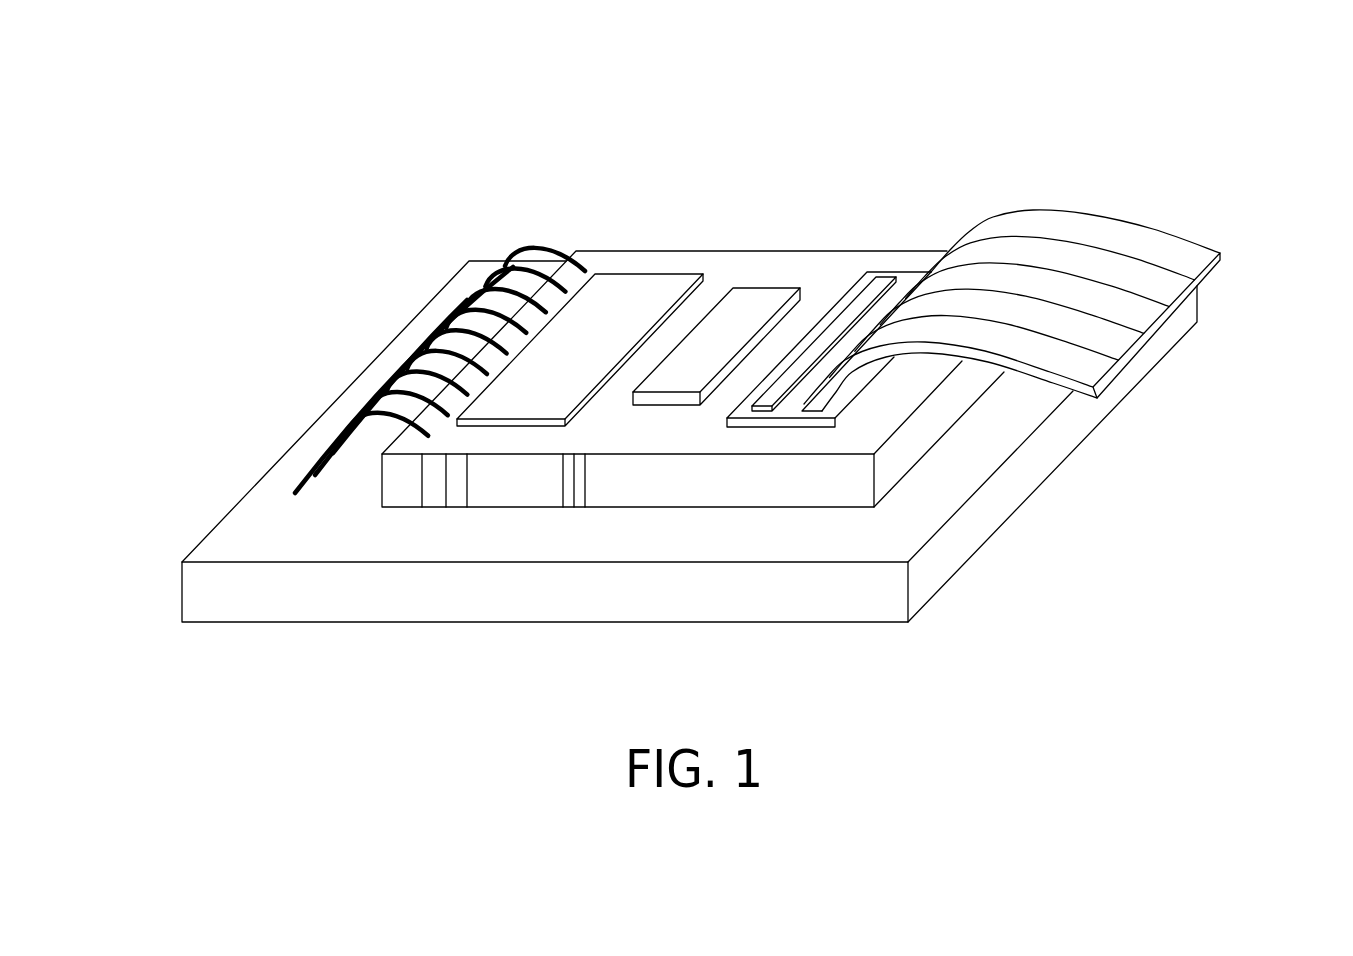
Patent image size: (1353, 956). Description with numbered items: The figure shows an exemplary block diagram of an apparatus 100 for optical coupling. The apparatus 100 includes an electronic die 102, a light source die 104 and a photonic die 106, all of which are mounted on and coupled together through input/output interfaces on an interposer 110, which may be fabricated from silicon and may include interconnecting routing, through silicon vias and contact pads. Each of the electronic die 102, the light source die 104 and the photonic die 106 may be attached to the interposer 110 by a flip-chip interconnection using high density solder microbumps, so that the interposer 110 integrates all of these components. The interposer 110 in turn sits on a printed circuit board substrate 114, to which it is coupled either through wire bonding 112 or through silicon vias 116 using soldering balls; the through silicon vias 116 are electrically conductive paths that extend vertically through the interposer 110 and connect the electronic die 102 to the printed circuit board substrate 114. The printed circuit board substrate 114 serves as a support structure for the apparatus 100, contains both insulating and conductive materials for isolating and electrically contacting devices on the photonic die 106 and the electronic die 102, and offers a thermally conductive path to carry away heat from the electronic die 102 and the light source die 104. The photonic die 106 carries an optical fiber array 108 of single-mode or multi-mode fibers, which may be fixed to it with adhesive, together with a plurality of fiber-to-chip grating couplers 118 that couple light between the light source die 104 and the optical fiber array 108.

The apparatus for optical coupling 100 is at (257, 200).
The electronic die 102 is at (673, 283).
The light source die 104 is at (758, 302).
The photonic die 106 is at (907, 280).
The optical fiber array 108 is at (1158, 243).
The interposer 110 is at (613, 260).
The wire bonding 112 is at (525, 241).
The printed circuit board substrate 114 is at (253, 523).
The through silicon vias 116 is at (433, 480).
The fiber-to-chip grating couplers 118 is at (878, 283).